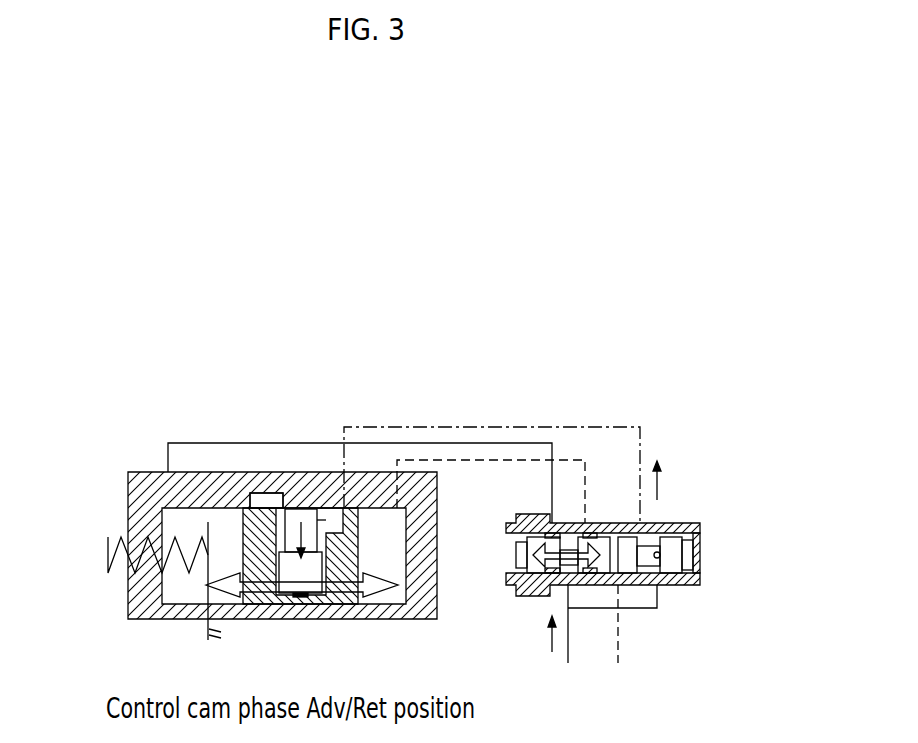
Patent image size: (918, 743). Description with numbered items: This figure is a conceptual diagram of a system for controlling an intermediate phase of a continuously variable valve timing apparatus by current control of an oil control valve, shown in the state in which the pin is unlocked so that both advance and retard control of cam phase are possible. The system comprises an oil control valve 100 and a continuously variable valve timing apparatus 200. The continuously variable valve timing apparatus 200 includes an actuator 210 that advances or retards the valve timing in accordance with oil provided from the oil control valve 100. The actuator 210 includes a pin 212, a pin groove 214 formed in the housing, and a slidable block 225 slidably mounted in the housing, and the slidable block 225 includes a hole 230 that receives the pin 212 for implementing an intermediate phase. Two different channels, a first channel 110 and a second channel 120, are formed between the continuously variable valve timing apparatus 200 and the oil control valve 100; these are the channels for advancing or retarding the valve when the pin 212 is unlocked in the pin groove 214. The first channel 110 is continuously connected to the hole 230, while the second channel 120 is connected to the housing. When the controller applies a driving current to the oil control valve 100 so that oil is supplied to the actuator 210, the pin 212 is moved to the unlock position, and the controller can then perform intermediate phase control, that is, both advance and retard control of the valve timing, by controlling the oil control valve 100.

The oil control valve 100 is at (672, 552).
The first channel 110 is at (640, 437).
The second channel 120 is at (537, 460).
The continuously variable valve timing apparatus 200 is at (138, 469).
The actuator 210 is at (190, 483).
The pin 212 is at (327, 568).
The pin groove 214 is at (262, 493).
The slidable block 225 is at (247, 560).
The hole 230 is at (323, 492).